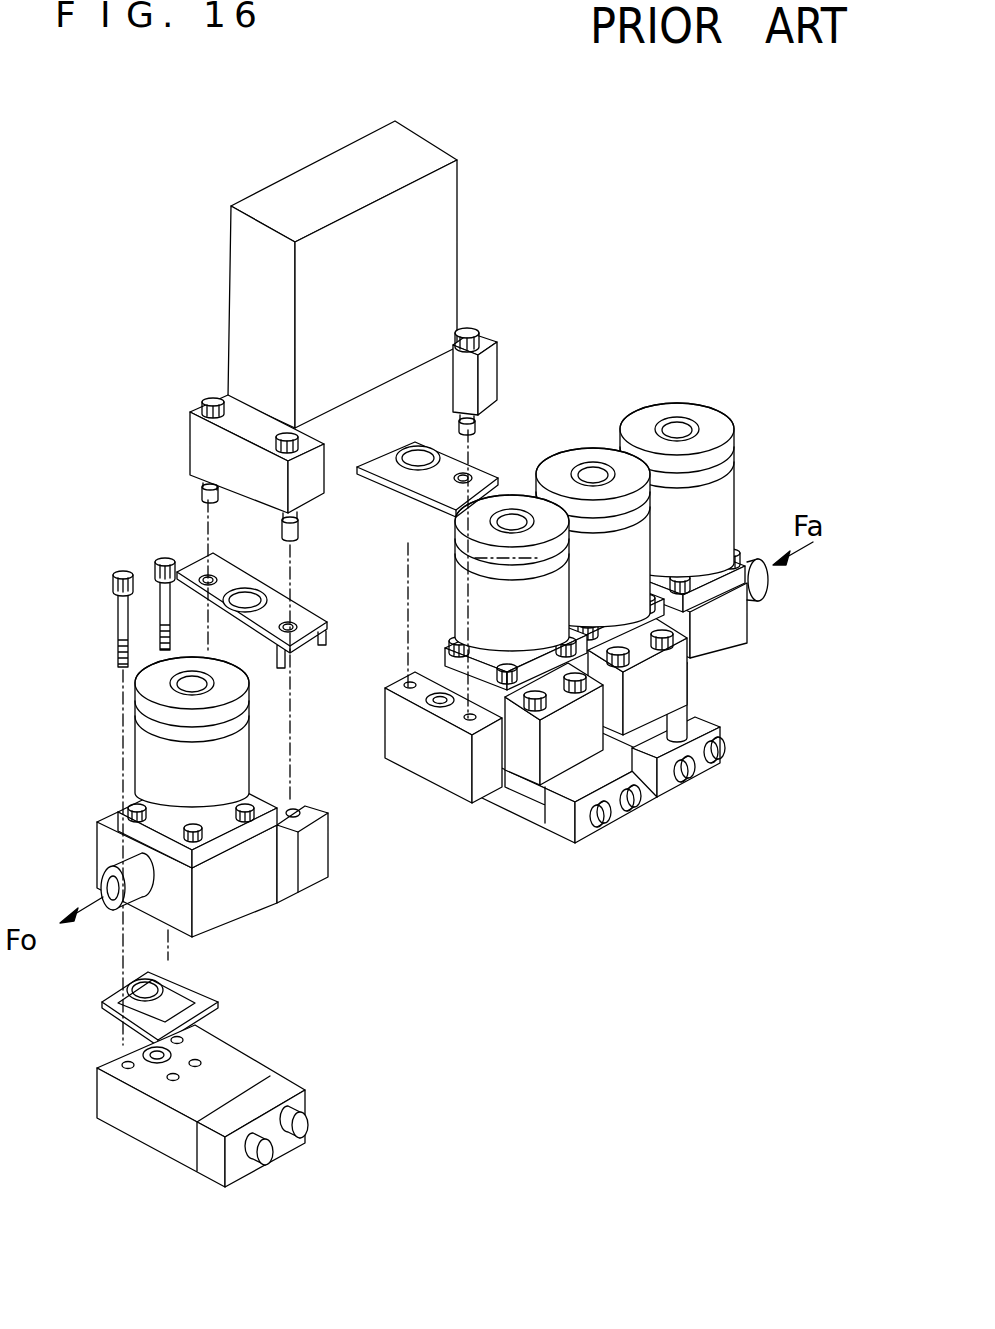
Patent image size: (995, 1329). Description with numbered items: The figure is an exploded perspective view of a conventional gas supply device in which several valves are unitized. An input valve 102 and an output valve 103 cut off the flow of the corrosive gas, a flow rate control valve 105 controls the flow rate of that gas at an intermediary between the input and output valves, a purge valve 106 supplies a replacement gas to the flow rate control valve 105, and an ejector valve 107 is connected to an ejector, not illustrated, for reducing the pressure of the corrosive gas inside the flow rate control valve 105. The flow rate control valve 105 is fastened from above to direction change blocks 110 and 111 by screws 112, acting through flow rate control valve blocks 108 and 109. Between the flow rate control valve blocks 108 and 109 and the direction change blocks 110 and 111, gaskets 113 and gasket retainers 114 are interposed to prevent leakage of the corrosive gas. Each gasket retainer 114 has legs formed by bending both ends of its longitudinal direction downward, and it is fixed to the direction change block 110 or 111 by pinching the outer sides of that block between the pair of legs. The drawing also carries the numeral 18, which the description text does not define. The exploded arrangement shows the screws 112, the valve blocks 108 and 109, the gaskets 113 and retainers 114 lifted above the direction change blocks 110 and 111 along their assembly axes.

The pin 18 is at (681, 698).
The input valve 102 is at (718, 540).
The output valve 103 is at (218, 795).
The flow rate control valve 105 is at (389, 330).
The purge valve 106 is at (551, 624).
The ejector valve 107 is at (629, 577).
The flow rate control valve block 108 is at (200, 440).
The flow rate control valve block 109 is at (490, 385).
The direction change block 110 is at (318, 878).
The direction change block 111 is at (451, 762).
The screw 112 is at (205, 393).
The gasket 113 is at (242, 590).
The gasket retainer 114 is at (313, 618).